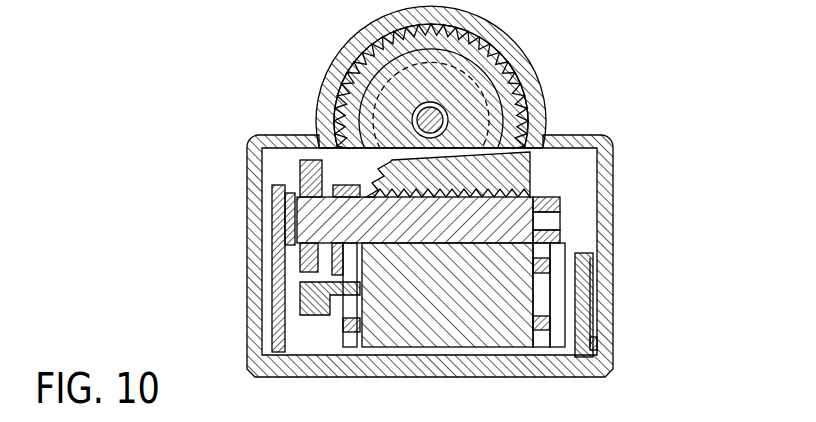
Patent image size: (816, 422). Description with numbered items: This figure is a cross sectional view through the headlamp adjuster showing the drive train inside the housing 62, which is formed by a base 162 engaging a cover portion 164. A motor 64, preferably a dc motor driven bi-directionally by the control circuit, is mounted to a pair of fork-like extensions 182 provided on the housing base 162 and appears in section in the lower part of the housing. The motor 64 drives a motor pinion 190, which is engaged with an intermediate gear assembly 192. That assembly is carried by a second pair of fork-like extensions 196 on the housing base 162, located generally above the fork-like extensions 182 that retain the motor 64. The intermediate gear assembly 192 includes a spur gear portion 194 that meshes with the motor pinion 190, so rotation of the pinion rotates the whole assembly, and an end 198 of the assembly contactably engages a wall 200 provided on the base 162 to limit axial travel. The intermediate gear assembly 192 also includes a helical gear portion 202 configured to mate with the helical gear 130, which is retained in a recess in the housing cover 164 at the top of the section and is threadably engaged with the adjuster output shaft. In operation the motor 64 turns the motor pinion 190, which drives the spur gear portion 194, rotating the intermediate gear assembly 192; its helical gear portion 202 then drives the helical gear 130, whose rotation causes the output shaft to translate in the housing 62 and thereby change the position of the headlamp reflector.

The housing 62 is at (613, 262).
The motor 64 is at (508, 273).
The helical gear 130 is at (403, 188).
The base 162 is at (568, 378).
The cover portion 164 is at (564, 132).
The fork-like extensions 182 is at (350, 324).
The motor pinion 190 is at (300, 299).
The intermediate gear assembly 192 is at (292, 181).
The spur gear portion 194 is at (303, 266).
The fork-like extensions 196 is at (318, 134).
The end 198 is at (303, 200).
The wall 200 is at (303, 220).
The helical gear portion 202 is at (508, 186).